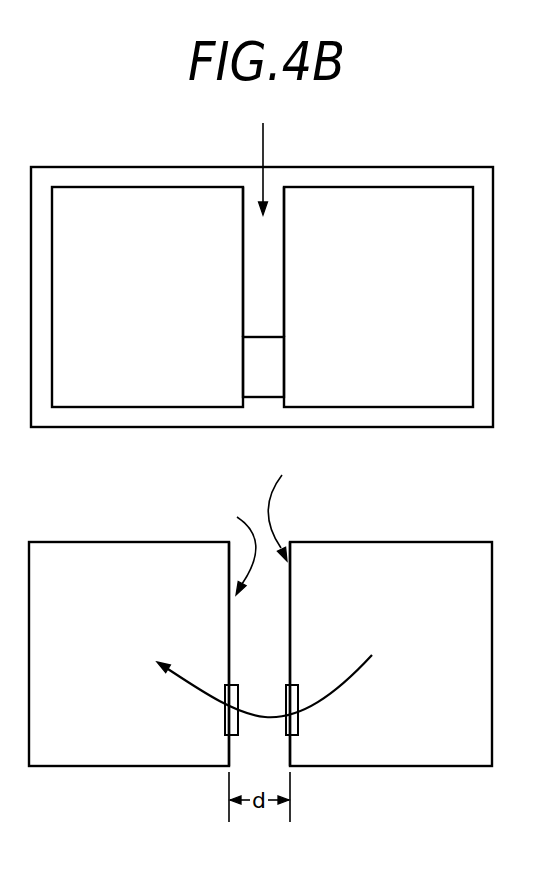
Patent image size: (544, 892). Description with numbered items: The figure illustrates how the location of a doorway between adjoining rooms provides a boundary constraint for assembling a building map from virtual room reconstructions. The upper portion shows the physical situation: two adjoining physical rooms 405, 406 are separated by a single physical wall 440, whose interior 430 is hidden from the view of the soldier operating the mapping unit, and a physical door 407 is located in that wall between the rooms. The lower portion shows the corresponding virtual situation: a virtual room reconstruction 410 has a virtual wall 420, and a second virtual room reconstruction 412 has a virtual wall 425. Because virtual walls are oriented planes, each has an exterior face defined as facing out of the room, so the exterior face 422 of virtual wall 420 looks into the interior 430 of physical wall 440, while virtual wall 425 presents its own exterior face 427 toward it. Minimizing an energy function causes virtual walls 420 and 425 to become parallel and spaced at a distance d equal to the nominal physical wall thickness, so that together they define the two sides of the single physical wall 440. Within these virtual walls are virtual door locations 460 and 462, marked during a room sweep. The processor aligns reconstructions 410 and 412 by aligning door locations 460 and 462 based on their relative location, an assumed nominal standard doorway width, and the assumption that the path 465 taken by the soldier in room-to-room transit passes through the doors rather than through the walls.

The interior of physical wall 430 is at (257, 153).
The physical wall 440 is at (283, 272).
The physical door 407 is at (283, 365).
The physical room 406 is at (125, 392).
The physical room 405 is at (463, 392).
The exterior face of virtual wall 422 is at (301, 504).
The exterior face of virtual wall 427 is at (224, 540).
The virtual wall 425 is at (229, 603).
The virtual wall 420 is at (290, 605).
The path 465 is at (350, 668).
The virtual door location 462 is at (232, 722).
The virtual door location 460 is at (298, 720).
The virtual room reconstruction 412 is at (83, 748).
The virtual room reconstruction 410 is at (475, 748).